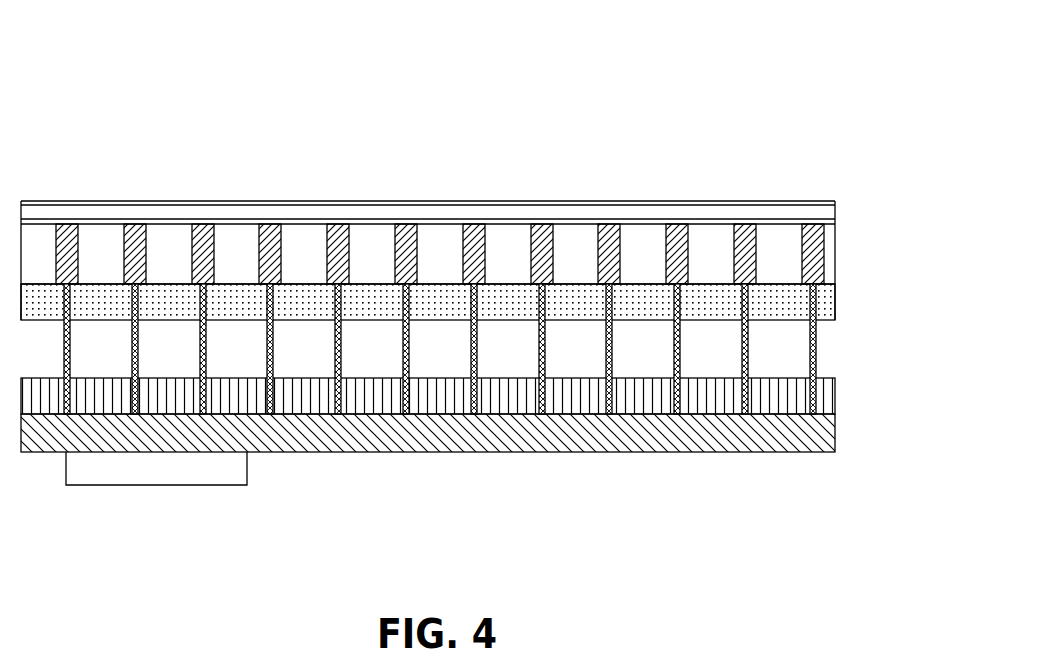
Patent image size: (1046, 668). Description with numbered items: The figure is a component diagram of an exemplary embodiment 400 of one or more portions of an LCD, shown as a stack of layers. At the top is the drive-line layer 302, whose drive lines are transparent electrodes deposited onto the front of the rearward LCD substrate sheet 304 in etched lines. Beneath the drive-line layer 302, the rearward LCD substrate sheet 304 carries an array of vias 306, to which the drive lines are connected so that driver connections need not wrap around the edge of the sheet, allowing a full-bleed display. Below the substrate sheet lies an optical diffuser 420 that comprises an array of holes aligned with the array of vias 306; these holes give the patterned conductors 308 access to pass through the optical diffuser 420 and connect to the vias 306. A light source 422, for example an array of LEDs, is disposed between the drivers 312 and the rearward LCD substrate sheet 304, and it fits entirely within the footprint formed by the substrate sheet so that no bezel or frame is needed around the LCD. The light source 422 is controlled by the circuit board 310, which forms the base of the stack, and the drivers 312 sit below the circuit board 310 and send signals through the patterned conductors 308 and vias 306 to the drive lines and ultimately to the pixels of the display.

The exemplary embodiment 400 is at (148, 73).
The drive-line layer 302 is at (835, 200).
The rearward LCD substrate sheet 304 is at (835, 232).
The vias 306 is at (812, 257).
The optical diffuser 420 is at (835, 308).
The patterned conductors 308 is at (817, 348).
The light source 422 is at (835, 395).
The circuit board 310 is at (835, 438).
The drivers 312 is at (247, 470).